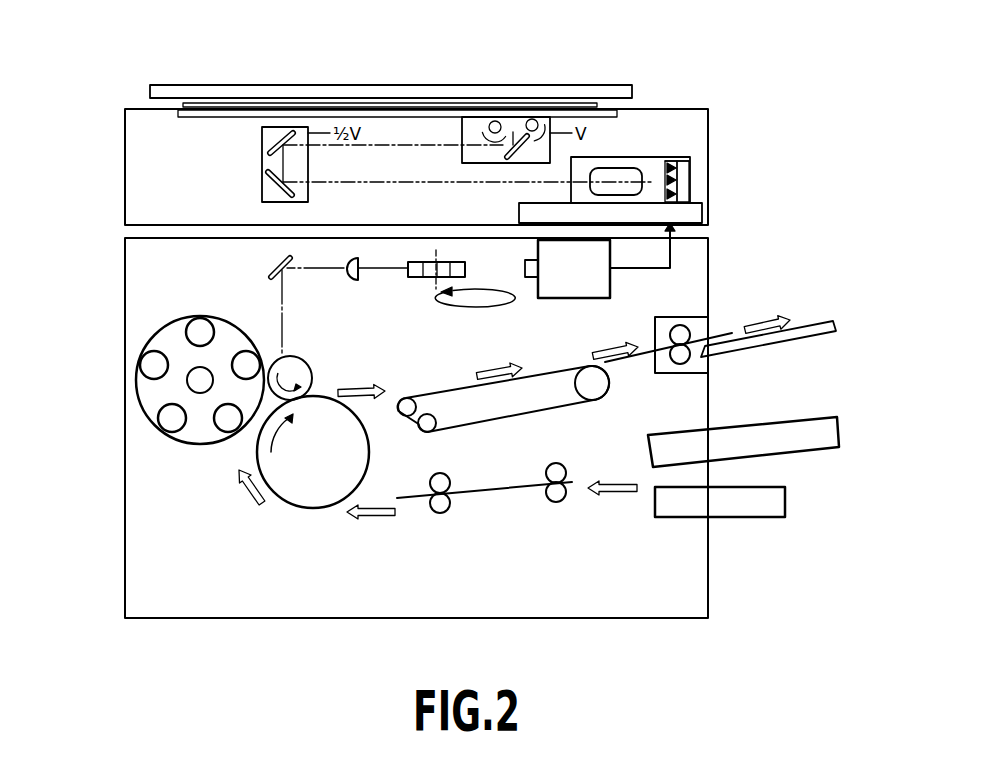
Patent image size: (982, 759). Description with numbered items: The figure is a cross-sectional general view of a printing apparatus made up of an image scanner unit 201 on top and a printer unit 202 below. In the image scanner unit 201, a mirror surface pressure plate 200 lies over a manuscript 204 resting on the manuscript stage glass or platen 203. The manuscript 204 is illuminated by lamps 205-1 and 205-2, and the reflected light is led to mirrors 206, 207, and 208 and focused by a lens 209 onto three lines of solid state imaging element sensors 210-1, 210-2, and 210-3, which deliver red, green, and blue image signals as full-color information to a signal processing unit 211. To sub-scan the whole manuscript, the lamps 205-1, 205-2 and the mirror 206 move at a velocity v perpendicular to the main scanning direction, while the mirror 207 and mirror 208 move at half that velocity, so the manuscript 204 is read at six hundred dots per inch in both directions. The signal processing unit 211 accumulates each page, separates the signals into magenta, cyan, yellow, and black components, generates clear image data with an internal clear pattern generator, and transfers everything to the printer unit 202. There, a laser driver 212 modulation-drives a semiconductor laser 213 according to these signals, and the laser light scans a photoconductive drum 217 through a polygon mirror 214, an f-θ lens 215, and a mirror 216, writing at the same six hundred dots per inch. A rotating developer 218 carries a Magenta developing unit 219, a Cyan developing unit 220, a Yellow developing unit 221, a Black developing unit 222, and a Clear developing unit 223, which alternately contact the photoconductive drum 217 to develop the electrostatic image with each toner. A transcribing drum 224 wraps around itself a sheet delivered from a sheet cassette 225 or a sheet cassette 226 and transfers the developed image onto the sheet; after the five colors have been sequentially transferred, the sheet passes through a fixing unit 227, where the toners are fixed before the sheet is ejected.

The mirror surface pressure plate 200 is at (232, 85).
The image scanner unit 201 is at (125, 165).
The printer unit 202 is at (125, 263).
The manuscript stage glass (platen) 203 is at (612, 110).
The manuscript 204 is at (418, 103).
The lamp 205-1 is at (496, 120).
The lamp 205-2 is at (533, 119).
The mirror 206 is at (503, 153).
The mirror 207 is at (277, 146).
The mirror 208 is at (272, 178).
The lens 209 is at (625, 167).
The solid state imaging element sensor (CCD) 210-1 is at (678, 162).
The solid state imaging element sensor (CCD) 210-2 is at (678, 176).
The solid state imaging element sensor (CCD) 210-3 is at (680, 190).
The signal processing unit 211 is at (672, 208).
The laser driver 212 is at (612, 278).
The semiconductor laser 213 is at (535, 278).
The polygon mirror 214 is at (415, 278).
The f-θ lens 215 is at (352, 283).
The mirror 216 is at (272, 268).
The photoconductive drum 217 is at (312, 378).
The rotating developer 218 is at (155, 330).
The Magenta developing unit 219 is at (247, 351).
The Cyan developing unit 220 is at (226, 432).
The Yellow developing unit 221 is at (173, 432).
The Black developing unit 222 is at (140, 362).
The Clear (transparent) developing unit 223 is at (200, 318).
The transcribing drum 224 is at (305, 506).
The sheet cassette 225 is at (738, 505).
The sheet cassette 226 is at (820, 447).
The fixing unit 227 is at (700, 365).